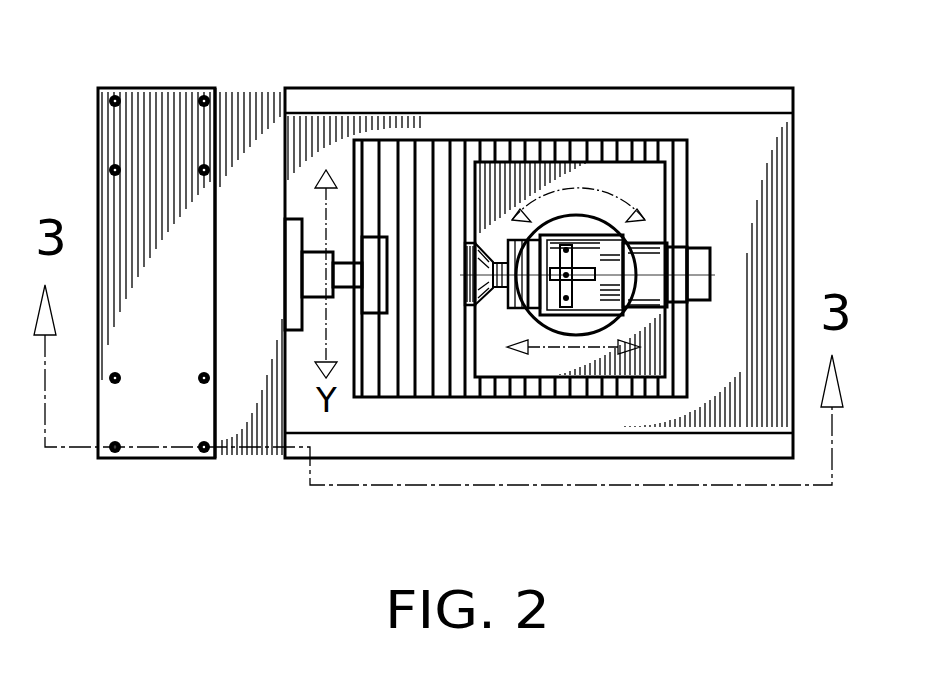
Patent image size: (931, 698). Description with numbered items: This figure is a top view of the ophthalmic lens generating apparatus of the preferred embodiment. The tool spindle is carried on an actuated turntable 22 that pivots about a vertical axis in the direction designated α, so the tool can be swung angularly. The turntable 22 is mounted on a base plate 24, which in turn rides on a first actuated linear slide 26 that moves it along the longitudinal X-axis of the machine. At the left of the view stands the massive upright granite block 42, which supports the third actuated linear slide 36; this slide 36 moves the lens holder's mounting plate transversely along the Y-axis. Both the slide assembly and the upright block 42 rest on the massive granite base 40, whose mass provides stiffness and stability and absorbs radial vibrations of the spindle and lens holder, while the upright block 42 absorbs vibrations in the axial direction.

The actuated turntable 22 is at (582, 213).
The base plate 24 is at (557, 373).
The first actuated linear slide 26 is at (646, 406).
The third actuated linear slide 36 is at (312, 274).
The granite base 40 is at (415, 100).
The upright granite block 42 is at (180, 100).